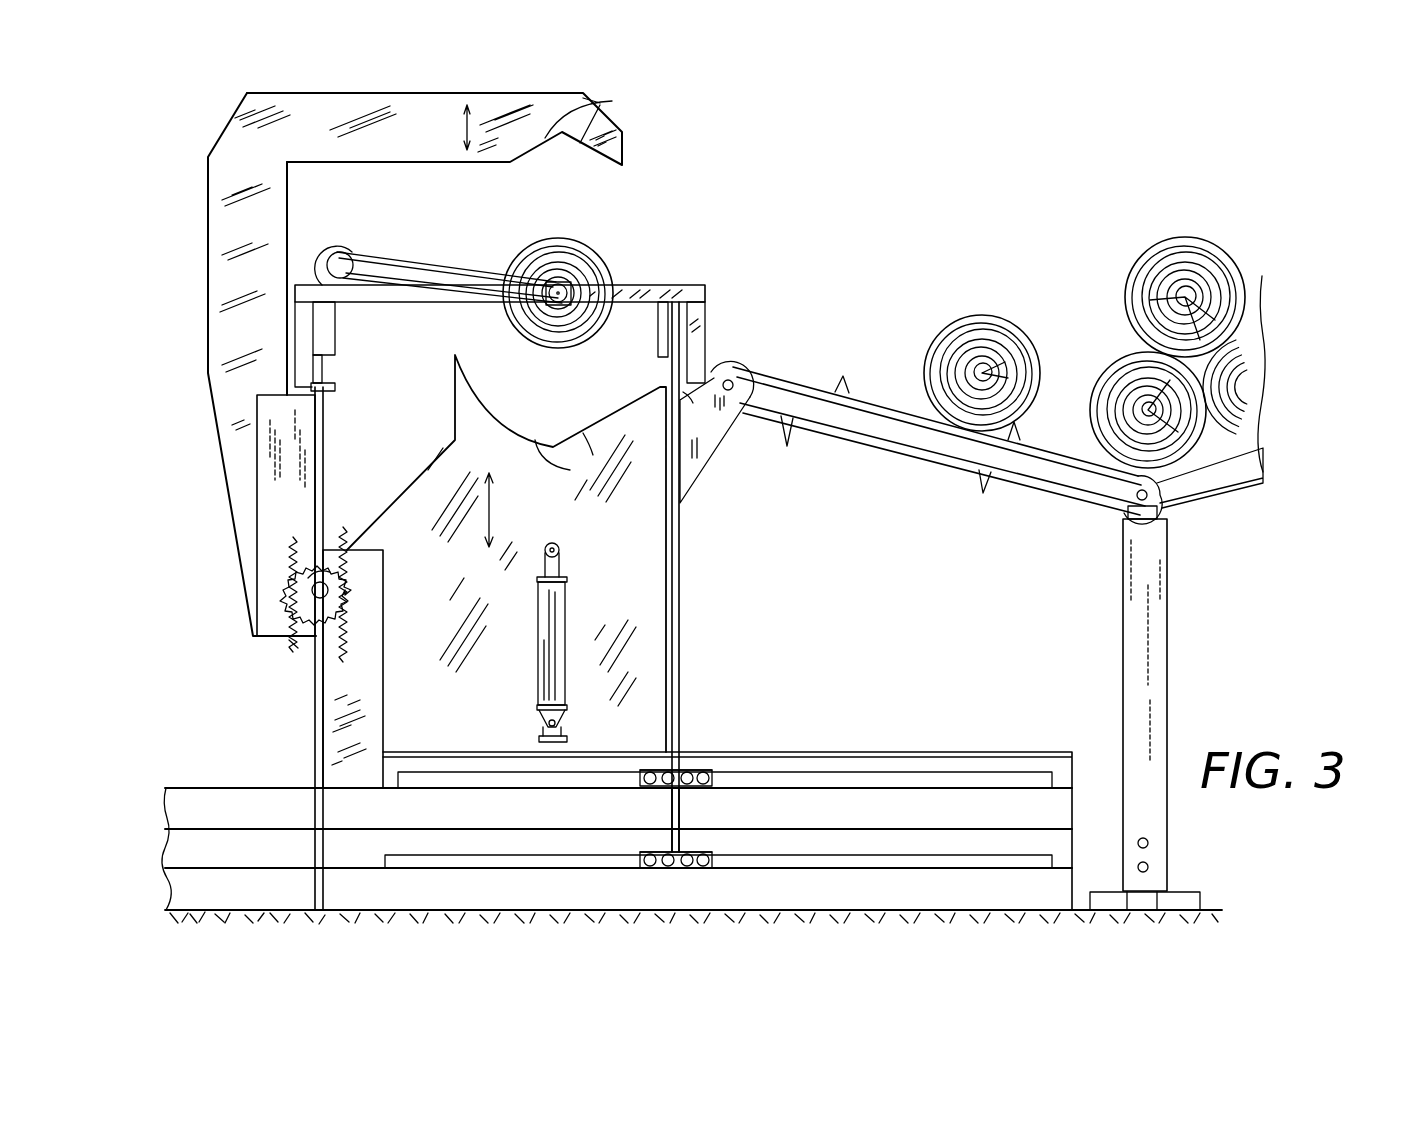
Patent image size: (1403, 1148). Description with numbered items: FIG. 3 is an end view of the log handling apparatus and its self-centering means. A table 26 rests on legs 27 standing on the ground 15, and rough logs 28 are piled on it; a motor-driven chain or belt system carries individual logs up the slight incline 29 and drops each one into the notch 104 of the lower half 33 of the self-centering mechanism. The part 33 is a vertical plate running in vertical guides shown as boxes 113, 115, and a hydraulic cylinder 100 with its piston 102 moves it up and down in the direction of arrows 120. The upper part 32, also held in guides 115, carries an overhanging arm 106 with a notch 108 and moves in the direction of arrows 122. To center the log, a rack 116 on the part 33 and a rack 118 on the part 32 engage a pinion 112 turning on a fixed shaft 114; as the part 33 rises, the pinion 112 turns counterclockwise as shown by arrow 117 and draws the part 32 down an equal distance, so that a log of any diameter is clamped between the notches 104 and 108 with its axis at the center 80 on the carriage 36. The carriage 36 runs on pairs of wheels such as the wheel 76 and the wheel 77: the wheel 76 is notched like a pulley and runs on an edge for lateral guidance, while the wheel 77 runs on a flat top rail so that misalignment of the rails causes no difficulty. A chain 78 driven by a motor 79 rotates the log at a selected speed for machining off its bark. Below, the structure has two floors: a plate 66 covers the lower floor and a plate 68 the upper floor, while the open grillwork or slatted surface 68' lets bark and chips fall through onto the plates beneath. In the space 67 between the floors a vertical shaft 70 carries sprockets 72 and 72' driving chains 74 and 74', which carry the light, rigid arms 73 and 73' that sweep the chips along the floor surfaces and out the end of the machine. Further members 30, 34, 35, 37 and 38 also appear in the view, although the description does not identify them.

The ground 15 is at (1218, 908).
The table 26 is at (1215, 492).
The legs 27 is at (1122, 655).
The rough logs 28 is at (1098, 364).
The slight incline 29 is at (902, 452).
The upper arm member 30 is at (840, 386).
The upper part 32 is at (207, 232).
The lower half of self-centering mechanism 33 is at (432, 466).
The pivot bracket 34 is at (330, 386).
The saw blade 35 is at (682, 605).
The carriage 36 is at (676, 285).
The vertical guide rod 37 is at (316, 700).
The drive wheel 38 is at (566, 243).
The plate 66 is at (518, 868).
The space between floors 67 is at (383, 860).
The plate 68 is at (617, 807).
The surface 68' is at (727, 801).
The vertical shaft 70 is at (682, 835).
The sprocket 72 is at (710, 843).
The sprocket 72' is at (693, 746).
The arms 73 is at (718, 831).
The arms 73' is at (725, 752).
The chain 74 is at (670, 879).
The chain 74' is at (715, 756).
The wheel 76 is at (667, 366).
The wheel 77 is at (335, 329).
The chain 78 is at (442, 262).
The motor 79 is at (332, 254).
The center 80 is at (575, 285).
The hydraulic cylinder 100 is at (534, 702).
The piston 102 is at (565, 572).
The notch 104 is at (580, 462).
The overhanging arm 106 is at (410, 95).
The notch 108 is at (600, 103).
The pinion 112 is at (338, 580).
The vertical guides 113 is at (390, 712).
The fixed shaft 114 is at (330, 593).
The guides 115 is at (262, 488).
The rack 116 is at (350, 647).
The arrow 117 is at (298, 556).
The rack 118 is at (292, 645).
The arrows 120 is at (497, 522).
The arrows 122 is at (462, 122).